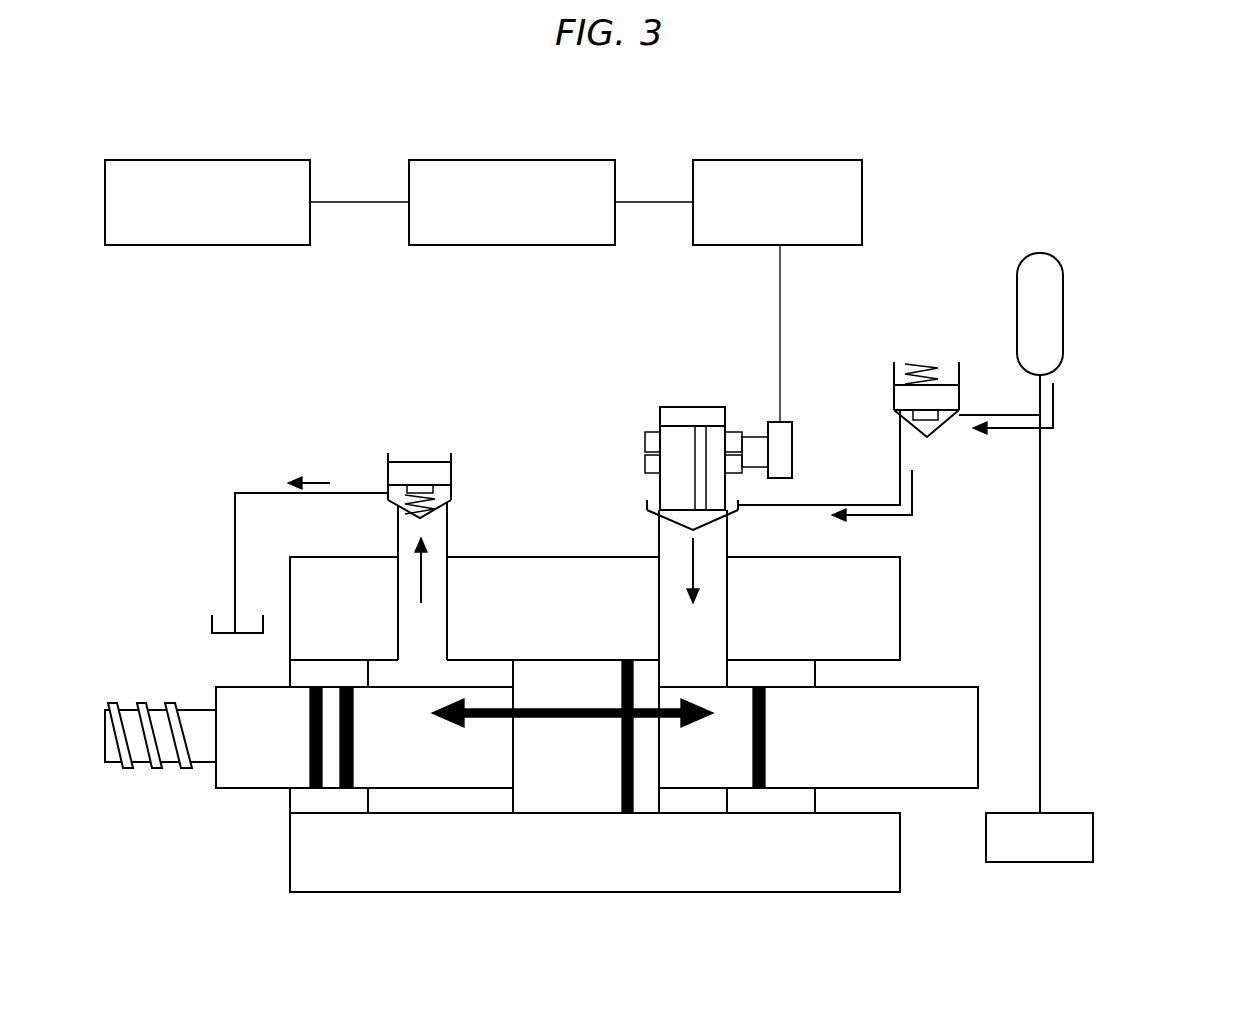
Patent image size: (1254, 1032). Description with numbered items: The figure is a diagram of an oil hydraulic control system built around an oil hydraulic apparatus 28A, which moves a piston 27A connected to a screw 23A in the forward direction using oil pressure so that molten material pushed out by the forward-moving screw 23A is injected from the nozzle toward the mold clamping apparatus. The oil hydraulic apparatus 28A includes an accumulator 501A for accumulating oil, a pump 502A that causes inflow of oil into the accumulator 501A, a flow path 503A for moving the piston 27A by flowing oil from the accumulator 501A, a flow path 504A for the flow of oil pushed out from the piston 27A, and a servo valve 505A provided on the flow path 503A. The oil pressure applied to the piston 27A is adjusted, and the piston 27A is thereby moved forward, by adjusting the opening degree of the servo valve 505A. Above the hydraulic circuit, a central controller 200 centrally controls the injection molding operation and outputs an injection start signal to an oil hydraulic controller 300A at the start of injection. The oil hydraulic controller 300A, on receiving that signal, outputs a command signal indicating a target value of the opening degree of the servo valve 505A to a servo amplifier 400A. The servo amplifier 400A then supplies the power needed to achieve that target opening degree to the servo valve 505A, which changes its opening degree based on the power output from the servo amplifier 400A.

The central controller 200 is at (203, 158).
The oil hydraulic controller 300A is at (514, 158).
The servo amplifier 400A is at (769, 158).
The accumulator 501A is at (1041, 250).
The pump 502A is at (1093, 838).
The flow path 503A is at (853, 503).
The flow path 504A is at (348, 492).
The servo valve 505A is at (687, 405).
The screw 23A is at (130, 715).
The piston 27A is at (550, 797).
The oil hydraulic apparatus 28A is at (745, 912).